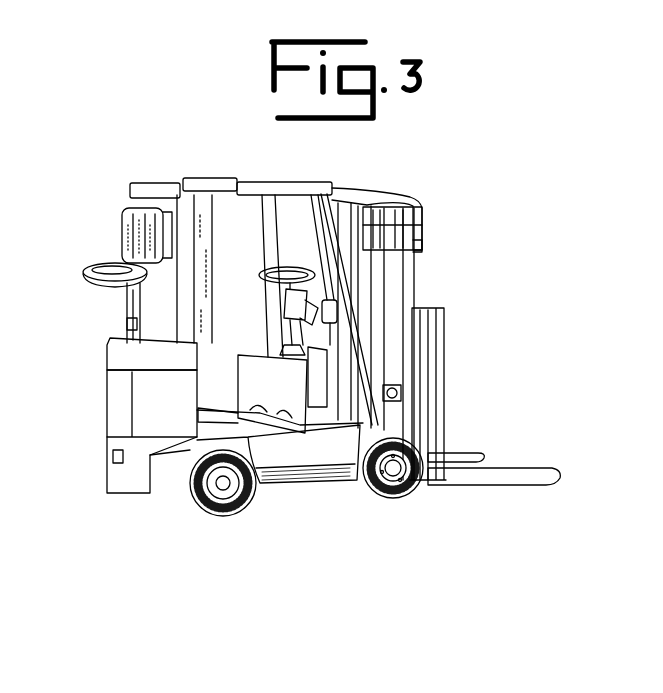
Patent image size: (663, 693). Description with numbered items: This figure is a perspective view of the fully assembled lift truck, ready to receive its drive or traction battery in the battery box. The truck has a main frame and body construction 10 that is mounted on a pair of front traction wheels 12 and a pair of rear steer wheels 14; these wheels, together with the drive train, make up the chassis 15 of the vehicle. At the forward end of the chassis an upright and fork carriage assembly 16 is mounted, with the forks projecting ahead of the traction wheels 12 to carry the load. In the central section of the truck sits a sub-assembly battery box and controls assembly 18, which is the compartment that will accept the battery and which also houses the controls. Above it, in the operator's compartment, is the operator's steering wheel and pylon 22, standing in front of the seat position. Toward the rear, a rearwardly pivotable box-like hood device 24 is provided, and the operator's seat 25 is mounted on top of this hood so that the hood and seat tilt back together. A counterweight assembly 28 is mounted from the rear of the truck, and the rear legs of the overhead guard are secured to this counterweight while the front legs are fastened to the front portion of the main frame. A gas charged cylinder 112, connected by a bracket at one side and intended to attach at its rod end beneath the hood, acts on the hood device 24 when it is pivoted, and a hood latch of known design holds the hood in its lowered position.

The body construction 10 is at (350, 458).
The traction wheels 12 is at (392, 482).
The steer wheels 14 is at (197, 500).
The chassis 15 is at (307, 482).
The upright and fork carriage assembly 16 is at (400, 345).
The battery box and controls assembly 18 is at (225, 418).
The operator's steering wheel and pylon 22 is at (280, 306).
The hood device 24 is at (204, 266).
The operator's seat 25 is at (148, 225).
The counterweight assembly 28 is at (123, 465).
The gas charged cylinder 112 is at (123, 303).